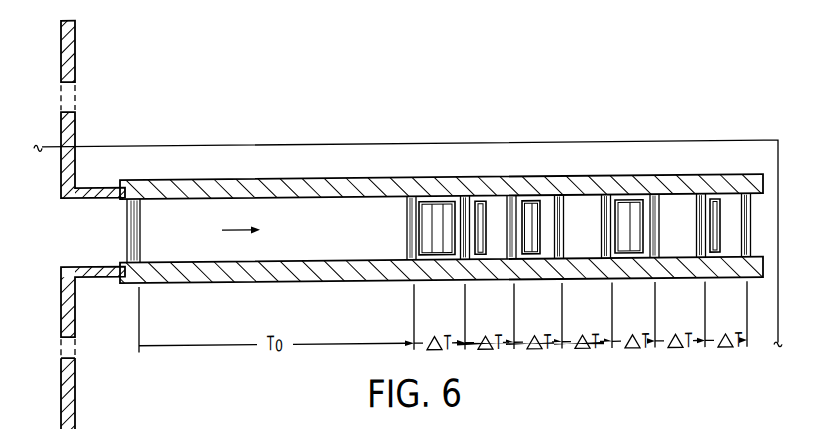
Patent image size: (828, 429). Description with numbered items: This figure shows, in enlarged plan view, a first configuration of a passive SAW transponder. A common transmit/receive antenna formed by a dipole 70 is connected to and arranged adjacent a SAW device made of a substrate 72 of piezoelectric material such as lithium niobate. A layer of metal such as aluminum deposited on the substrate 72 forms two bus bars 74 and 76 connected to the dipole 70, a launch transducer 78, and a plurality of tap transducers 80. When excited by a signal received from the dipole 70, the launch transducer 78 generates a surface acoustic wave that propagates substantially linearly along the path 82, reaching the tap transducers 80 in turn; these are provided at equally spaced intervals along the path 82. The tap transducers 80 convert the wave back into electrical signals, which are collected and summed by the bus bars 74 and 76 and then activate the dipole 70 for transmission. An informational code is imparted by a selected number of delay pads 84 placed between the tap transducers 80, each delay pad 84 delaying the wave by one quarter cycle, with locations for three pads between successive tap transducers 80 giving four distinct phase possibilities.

The dipole 70 is at (64, 264).
The substrate 72 is at (670, 144).
The bus bar 74 is at (223, 181).
The bus bar 76 is at (225, 274).
The launch transducer 78 is at (131, 196).
The tap transducers 80 is at (465, 197).
The path 82 is at (243, 228).
The delay pads 84 is at (477, 255).